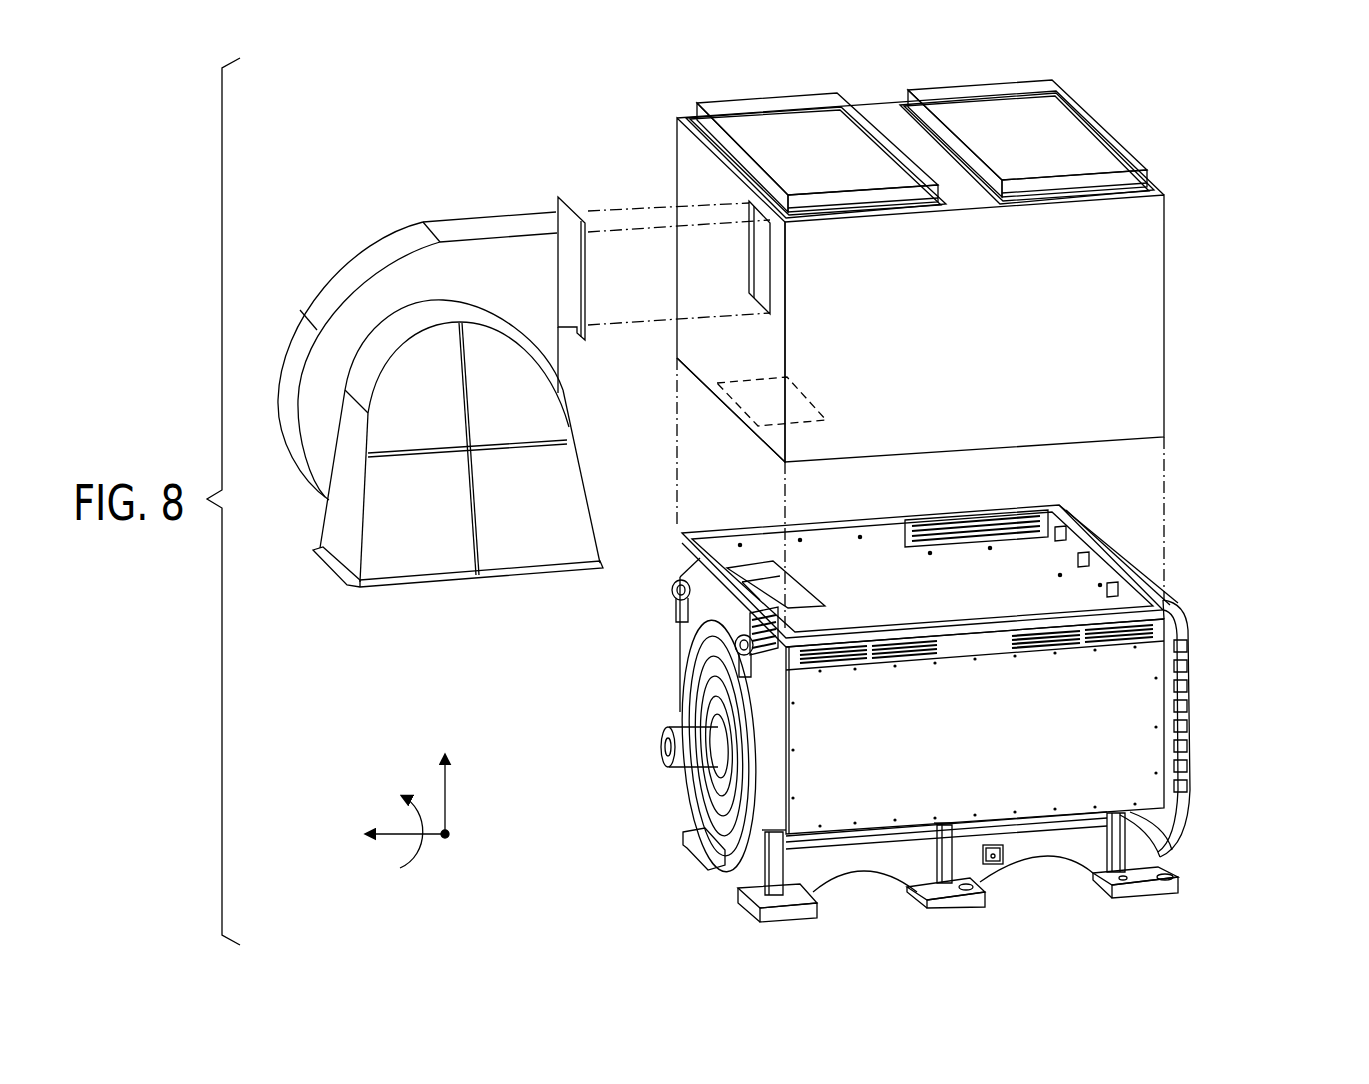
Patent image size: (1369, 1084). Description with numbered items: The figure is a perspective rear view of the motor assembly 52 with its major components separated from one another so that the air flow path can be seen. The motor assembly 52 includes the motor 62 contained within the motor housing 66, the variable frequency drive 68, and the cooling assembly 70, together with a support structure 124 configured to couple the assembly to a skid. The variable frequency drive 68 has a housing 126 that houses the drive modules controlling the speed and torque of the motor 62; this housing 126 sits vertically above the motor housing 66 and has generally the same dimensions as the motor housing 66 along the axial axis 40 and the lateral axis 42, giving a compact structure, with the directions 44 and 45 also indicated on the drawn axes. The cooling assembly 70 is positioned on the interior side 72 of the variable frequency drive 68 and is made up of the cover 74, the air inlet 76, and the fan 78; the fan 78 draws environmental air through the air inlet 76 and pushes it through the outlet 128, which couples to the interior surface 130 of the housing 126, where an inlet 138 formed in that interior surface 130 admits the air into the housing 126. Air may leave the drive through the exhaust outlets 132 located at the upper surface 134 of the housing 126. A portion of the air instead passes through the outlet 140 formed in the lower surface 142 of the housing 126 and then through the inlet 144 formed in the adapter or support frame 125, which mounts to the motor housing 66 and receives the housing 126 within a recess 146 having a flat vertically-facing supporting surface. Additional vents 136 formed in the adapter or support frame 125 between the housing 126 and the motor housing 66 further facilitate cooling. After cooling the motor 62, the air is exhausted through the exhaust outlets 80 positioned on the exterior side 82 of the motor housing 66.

The axial axis 40 is at (395, 836).
The lateral axis 42 is at (448, 832).
The circumferential direction 44 is at (418, 855).
The radial direction 45 is at (446, 798).
The motor assembly 52 is at (1240, 148).
The motor 62 is at (1209, 773).
The motor housing 66 is at (692, 782).
The variable frequency drive 68 is at (1148, 320).
The cooling assembly 70 is at (360, 190).
The interior side 72 is at (663, 283).
The cover 74 is at (532, 543).
The air inlet 76 is at (460, 602).
The fan 78 is at (360, 263).
The exhaust outlets 80 is at (1175, 695).
The exterior side 82 is at (1216, 665).
The support structure 124 is at (963, 903).
The adapter or support frame 125 is at (1082, 532).
The housing 126 is at (1148, 275).
The outlet 128 is at (588, 262).
The interior surface 130 is at (690, 155).
The exhaust outlets 132 is at (1067, 138).
The upper surface 134 is at (889, 118).
The additional vents 136 is at (1122, 638).
The inlet 138 is at (770, 266).
The outlet 140 is at (808, 401).
The lower surface 142 is at (711, 392).
The inlet 144 is at (748, 568).
The recess 146 is at (864, 566).